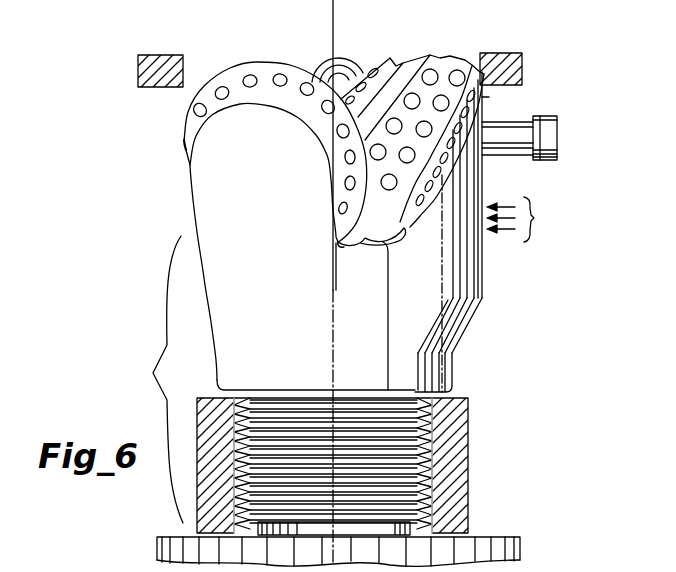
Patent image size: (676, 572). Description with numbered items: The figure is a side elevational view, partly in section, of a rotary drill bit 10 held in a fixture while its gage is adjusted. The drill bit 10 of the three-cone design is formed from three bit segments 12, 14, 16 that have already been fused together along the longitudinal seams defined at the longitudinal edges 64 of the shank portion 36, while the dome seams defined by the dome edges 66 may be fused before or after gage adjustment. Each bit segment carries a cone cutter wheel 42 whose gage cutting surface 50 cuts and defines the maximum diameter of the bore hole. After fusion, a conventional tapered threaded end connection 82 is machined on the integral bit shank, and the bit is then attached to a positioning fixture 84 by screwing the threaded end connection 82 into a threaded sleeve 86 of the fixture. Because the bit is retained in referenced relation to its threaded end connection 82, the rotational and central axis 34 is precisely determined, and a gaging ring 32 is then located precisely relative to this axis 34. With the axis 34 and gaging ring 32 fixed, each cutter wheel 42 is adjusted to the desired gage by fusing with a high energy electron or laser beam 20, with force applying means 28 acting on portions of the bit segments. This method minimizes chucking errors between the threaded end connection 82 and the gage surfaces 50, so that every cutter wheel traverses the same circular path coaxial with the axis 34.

The rotary drill bit 10 is at (299, 355).
The bit segment 12 is at (481, 298).
The bit segment 14 is at (207, 213).
The bit segment 16 is at (352, 62).
The high energy electron or laser beam 20 is at (524, 219).
The force applying means 28 is at (546, 140).
The gaging ring 32 is at (173, 33).
The rotational and central axis 34 is at (333, 14).
The shank portion 36 is at (151, 379).
The cone cutter wheel 42 is at (291, 43).
The gage cutting surface 50 is at (482, 97).
The longitudinal edges 64 is at (388, 299).
The dome edge 66 is at (404, 228).
The tapered threaded end connection 82 is at (428, 430).
The positioning fixture 84 is at (508, 545).
The threaded sleeve 86 is at (457, 469).